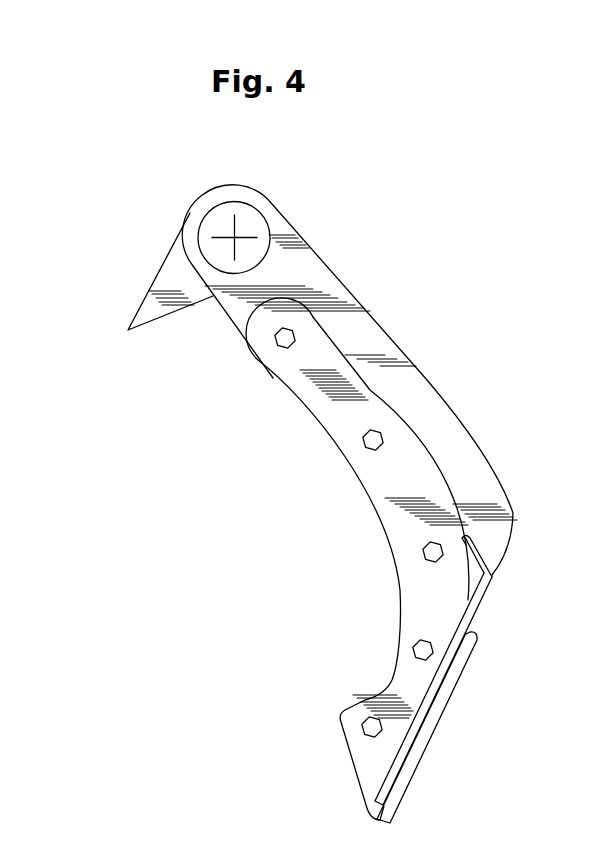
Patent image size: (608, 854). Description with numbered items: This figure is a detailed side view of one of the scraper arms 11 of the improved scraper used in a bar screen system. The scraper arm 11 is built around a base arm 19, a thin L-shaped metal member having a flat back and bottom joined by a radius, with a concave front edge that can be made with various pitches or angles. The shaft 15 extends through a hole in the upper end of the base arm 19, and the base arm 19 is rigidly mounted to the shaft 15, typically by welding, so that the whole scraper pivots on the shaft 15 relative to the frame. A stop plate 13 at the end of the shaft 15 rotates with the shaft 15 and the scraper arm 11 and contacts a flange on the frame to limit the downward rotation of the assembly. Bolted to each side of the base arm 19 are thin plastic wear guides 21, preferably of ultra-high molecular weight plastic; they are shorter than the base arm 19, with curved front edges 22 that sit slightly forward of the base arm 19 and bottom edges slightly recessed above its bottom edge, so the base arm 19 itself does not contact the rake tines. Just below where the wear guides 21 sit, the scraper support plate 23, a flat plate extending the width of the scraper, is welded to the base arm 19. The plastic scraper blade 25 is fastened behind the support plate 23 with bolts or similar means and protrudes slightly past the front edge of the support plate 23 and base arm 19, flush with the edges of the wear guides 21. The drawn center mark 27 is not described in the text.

The scraper arm 11 is at (465, 346).
The stop plate 13 is at (168, 253).
The shaft 15 is at (235, 205).
The base arm 19 is at (475, 433).
The wear guide 21 is at (453, 495).
The curved front edge 22 is at (398, 578).
The scraper support plate 23 is at (483, 553).
The scraper blade 25 is at (460, 688).
The pivot axis mark 27 is at (234, 237).